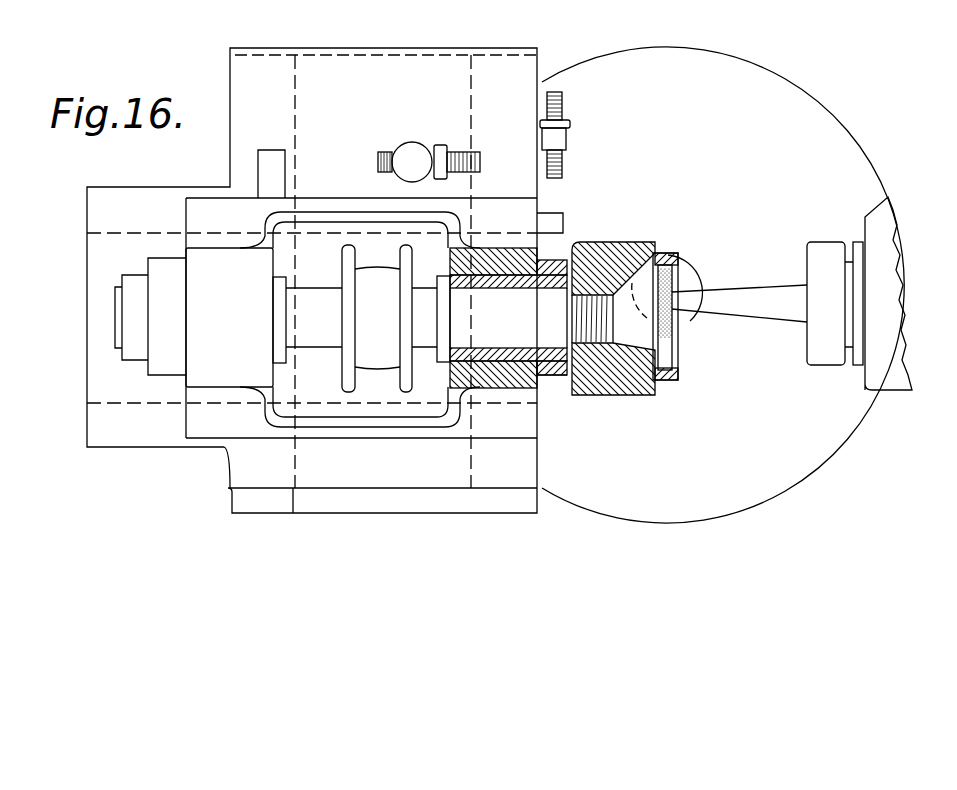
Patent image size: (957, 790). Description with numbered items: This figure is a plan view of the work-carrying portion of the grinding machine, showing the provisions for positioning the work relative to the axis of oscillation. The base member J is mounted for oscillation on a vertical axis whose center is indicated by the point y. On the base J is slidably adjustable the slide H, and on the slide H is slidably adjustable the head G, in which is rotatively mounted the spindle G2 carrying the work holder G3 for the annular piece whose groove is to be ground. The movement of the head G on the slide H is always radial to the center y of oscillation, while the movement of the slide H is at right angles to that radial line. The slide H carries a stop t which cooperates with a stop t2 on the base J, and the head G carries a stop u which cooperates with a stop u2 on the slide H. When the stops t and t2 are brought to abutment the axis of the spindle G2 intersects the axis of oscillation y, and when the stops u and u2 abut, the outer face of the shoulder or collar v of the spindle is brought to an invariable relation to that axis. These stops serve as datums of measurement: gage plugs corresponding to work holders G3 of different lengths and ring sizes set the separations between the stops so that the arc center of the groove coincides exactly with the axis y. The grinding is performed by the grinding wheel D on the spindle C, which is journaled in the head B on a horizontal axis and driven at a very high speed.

The slide H is at (214, 476).
The stop u is at (270, 156).
The stop u2 is at (378, 158).
The stop t2 is at (567, 160).
The stop t is at (551, 221).
The head G is at (194, 317).
The spindle G2 is at (318, 292).
The work holder G3 is at (622, 242).
The shoulder or collar v is at (580, 393).
The grinding wheel D is at (667, 335).
The axial center of oscillation y is at (678, 273).
The spindle C is at (757, 313).
The head B is at (898, 346).
The base member J is at (723, 285).